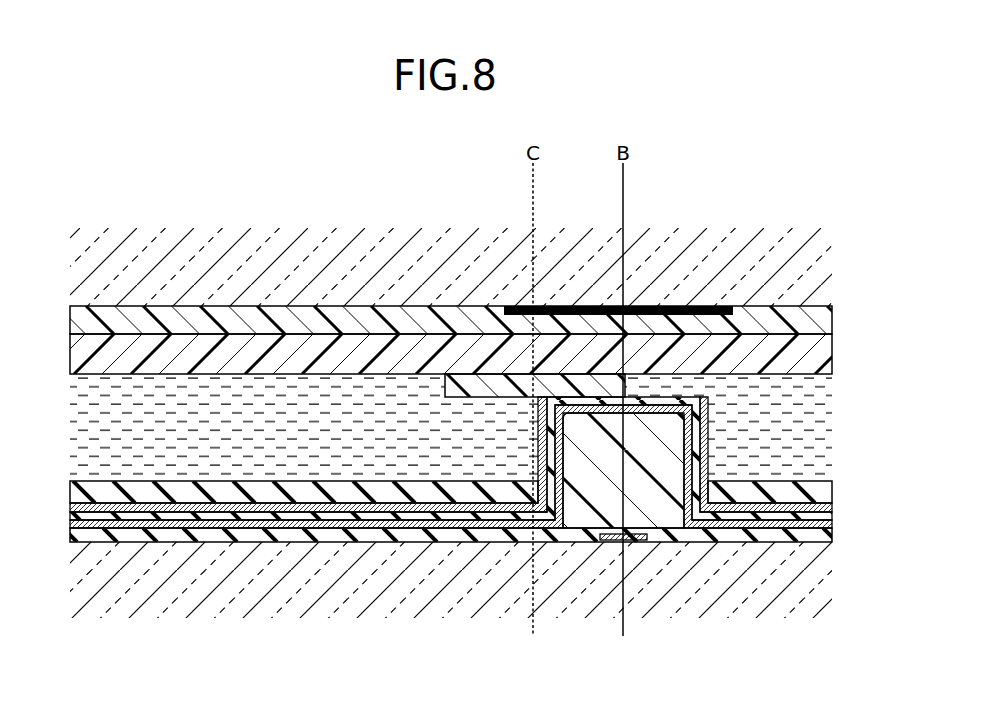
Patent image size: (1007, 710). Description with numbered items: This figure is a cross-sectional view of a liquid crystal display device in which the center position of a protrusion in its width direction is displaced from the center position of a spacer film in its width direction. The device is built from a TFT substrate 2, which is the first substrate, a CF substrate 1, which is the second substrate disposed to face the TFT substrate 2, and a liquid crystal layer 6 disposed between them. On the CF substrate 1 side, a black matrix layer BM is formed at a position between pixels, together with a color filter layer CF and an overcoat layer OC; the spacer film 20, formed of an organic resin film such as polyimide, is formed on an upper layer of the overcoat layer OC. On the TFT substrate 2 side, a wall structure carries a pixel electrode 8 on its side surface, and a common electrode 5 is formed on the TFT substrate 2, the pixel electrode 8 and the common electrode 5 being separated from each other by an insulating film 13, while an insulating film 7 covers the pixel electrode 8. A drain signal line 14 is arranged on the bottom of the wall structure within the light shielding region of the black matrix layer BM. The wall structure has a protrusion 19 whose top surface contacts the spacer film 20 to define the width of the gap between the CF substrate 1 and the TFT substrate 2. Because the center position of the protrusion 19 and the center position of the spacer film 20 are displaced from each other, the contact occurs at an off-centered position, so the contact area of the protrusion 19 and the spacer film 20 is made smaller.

The CF substrate 1 is at (240, 262).
The TFT substrate 2 is at (157, 602).
The common electrode 5 is at (448, 535).
The liquid crystal layer 6 is at (210, 442).
The insulating film 7 is at (232, 490).
The pixel electrode 8 is at (305, 506).
The insulating film 13 is at (388, 515).
The drain signal line 14 is at (617, 540).
The protrusion 19 is at (650, 425).
The spacer film 20 is at (468, 385).
The black matrix layer BM is at (585, 306).
The color filter layer CF is at (765, 320).
The overcoat layer OC is at (790, 345).